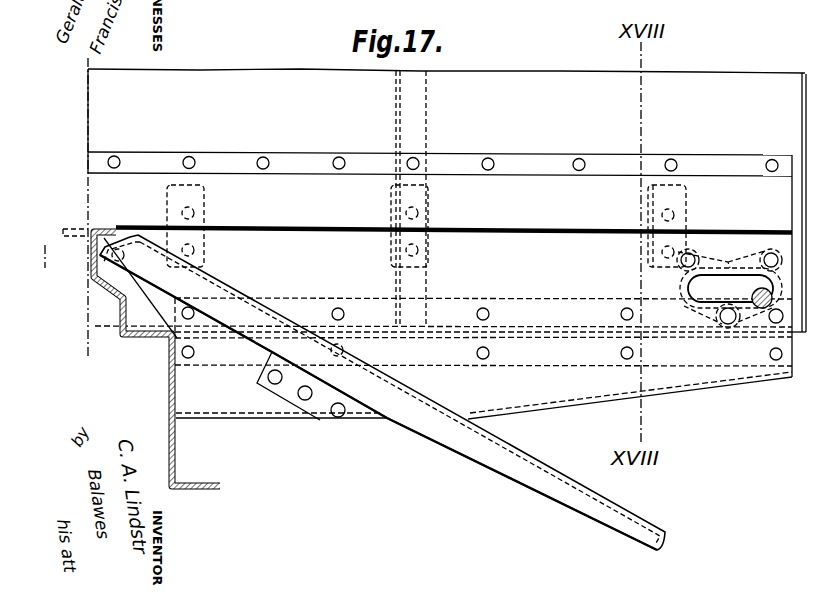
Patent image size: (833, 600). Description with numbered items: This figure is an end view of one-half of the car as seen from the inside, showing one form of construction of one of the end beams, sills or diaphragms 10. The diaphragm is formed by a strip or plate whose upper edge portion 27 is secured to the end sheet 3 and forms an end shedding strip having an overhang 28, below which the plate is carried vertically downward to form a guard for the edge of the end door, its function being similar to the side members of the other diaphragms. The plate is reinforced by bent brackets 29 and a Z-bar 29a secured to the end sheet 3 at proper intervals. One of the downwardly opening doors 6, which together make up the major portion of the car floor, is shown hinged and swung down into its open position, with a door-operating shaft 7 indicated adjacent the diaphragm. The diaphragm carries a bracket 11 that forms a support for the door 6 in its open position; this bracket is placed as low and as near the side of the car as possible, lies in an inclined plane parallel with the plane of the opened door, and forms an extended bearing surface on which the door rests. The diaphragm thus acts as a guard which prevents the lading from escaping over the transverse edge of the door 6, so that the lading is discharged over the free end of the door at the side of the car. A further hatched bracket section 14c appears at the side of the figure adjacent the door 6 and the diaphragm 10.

The end sheet 3 is at (447, 200).
The upper edge portion 27 is at (440, 193).
The overhang 28 is at (563, 233).
The end beam, sill or diaphragm 10 is at (677, 386).
The bent brackets 29 is at (445, 199).
The Z-bar 29a is at (722, 372).
The door-operating shaft 7 is at (756, 296).
The hatched bracket section 14c is at (44, 249).
The door 6 is at (445, 431).
The bracket 11 is at (282, 386).